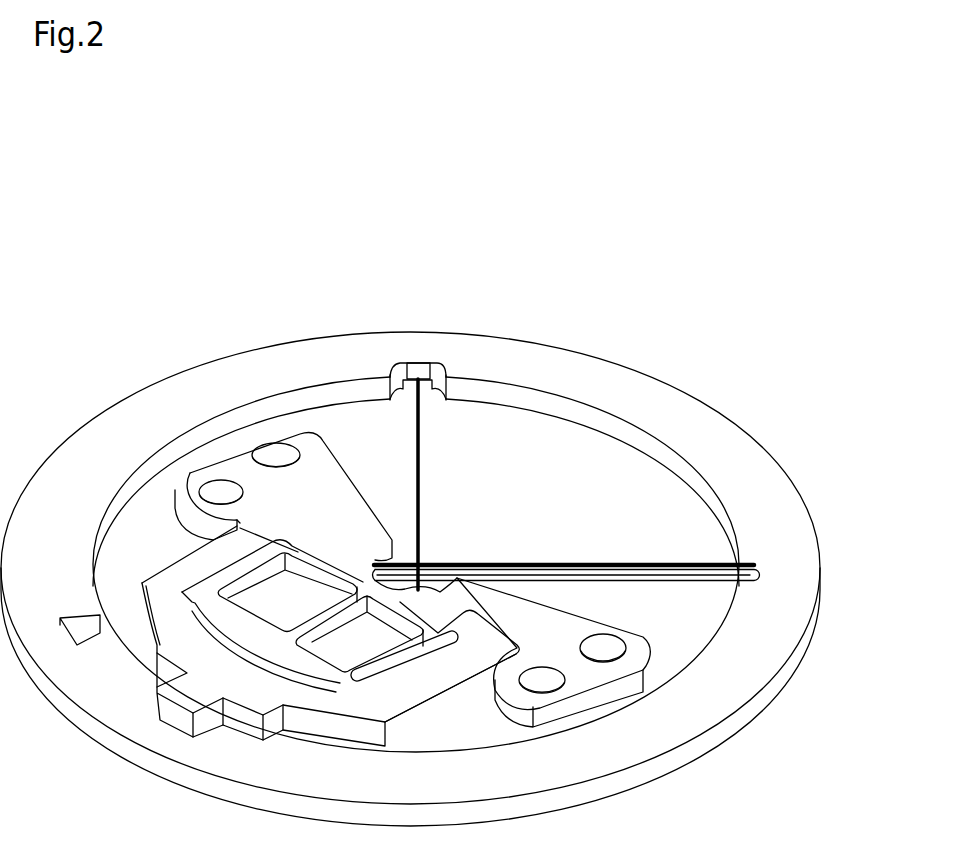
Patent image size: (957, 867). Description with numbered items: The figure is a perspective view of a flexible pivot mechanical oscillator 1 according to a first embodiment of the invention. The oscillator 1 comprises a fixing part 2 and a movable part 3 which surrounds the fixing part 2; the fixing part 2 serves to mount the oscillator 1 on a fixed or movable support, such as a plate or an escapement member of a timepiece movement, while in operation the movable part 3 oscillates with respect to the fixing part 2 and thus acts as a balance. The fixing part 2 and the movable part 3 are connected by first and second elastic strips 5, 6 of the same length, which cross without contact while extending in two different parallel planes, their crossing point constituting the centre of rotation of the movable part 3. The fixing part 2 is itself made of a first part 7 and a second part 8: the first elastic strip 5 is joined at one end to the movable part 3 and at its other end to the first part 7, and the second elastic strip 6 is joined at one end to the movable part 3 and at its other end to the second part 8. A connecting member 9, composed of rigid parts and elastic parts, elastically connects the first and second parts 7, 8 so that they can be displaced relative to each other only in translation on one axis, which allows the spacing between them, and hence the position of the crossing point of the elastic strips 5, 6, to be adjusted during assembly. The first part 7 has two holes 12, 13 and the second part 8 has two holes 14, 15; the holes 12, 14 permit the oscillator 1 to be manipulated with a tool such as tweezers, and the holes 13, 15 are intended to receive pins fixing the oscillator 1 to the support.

The flexible pivot mechanical oscillator 1 is at (717, 303).
The fixing part 2 is at (653, 639).
The movable part 3 is at (312, 353).
The first elastic strip 5 is at (560, 573).
The second elastic strip 6 is at (421, 470).
The first part 7 is at (347, 497).
The second part 8 is at (538, 612).
The connecting member 9 is at (422, 724).
The hole 12 is at (220, 494).
The hole 13 is at (292, 452).
The hole 14 is at (540, 678).
The hole 15 is at (603, 636).